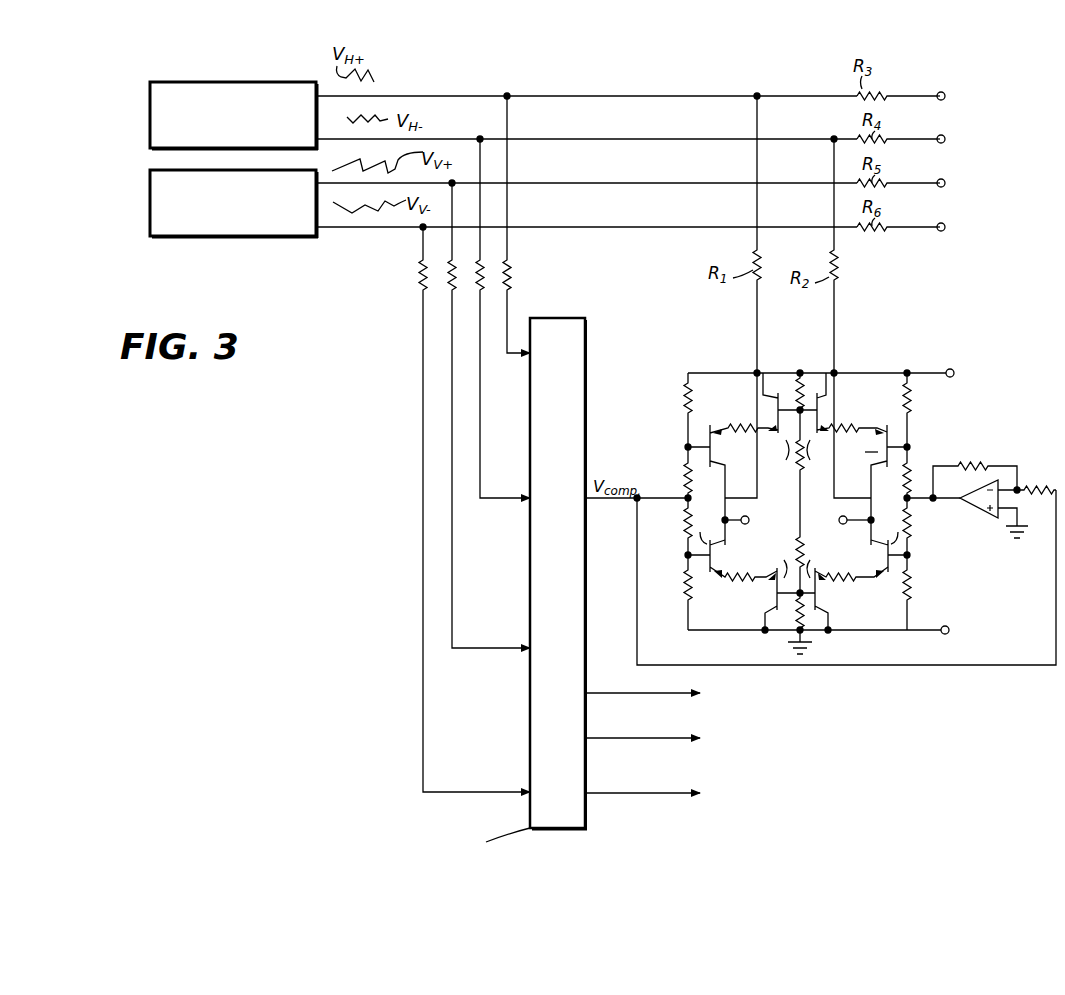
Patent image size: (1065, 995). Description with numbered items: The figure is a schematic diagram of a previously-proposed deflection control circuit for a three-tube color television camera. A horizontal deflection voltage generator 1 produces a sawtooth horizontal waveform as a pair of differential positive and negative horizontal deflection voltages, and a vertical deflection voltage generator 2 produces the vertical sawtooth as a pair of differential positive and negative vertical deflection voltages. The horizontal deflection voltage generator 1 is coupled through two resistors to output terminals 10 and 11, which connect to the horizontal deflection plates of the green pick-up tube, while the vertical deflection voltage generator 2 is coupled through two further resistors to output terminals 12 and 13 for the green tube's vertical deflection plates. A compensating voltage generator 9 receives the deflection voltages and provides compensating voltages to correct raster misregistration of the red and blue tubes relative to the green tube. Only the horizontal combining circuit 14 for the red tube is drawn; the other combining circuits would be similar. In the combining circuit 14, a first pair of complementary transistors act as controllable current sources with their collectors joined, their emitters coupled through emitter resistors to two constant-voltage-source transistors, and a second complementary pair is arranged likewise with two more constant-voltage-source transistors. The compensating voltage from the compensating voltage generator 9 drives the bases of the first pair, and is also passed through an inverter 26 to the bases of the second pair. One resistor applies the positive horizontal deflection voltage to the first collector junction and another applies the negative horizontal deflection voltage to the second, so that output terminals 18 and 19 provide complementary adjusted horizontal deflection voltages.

The horizontal deflection voltage generator 1 is at (150, 112).
The vertical deflection voltage generator 2 is at (150, 192).
The compensating voltage generator 9 is at (578, 318).
The output terminal 10 is at (946, 96).
The output terminal 11 is at (946, 139).
The output terminal 12 is at (946, 183).
The output terminal 13 is at (946, 227).
The horizontal combining circuit 14 is at (827, 490).
The output terminal 18 is at (749, 520).
The output terminal 19 is at (839, 520).
The inverter 26 is at (1007, 452).